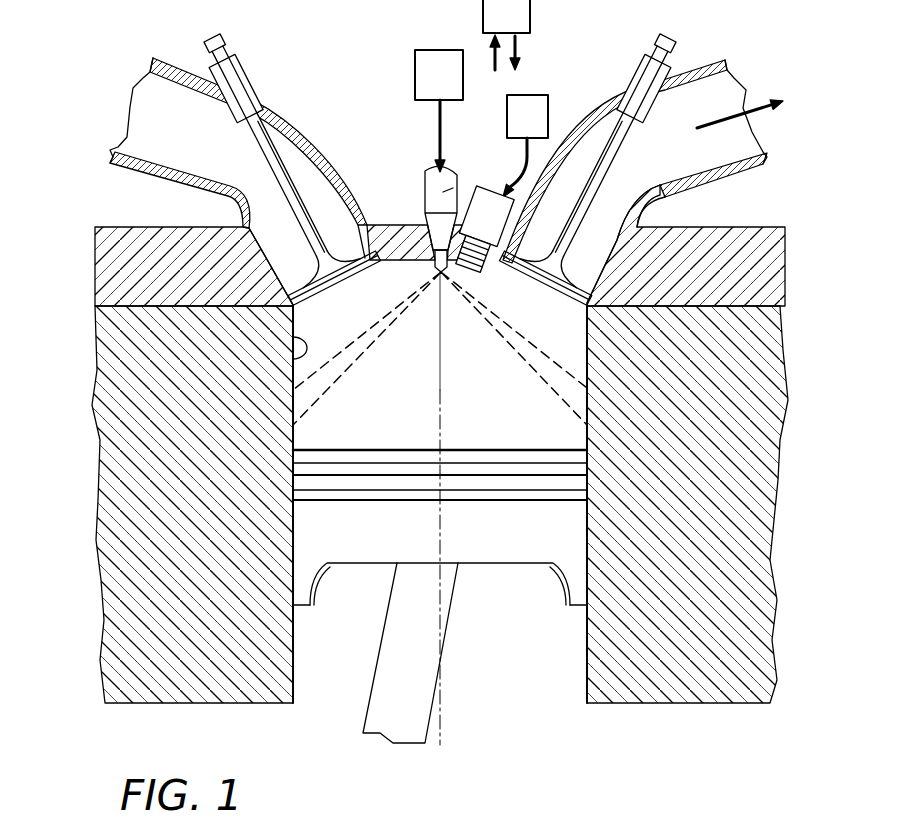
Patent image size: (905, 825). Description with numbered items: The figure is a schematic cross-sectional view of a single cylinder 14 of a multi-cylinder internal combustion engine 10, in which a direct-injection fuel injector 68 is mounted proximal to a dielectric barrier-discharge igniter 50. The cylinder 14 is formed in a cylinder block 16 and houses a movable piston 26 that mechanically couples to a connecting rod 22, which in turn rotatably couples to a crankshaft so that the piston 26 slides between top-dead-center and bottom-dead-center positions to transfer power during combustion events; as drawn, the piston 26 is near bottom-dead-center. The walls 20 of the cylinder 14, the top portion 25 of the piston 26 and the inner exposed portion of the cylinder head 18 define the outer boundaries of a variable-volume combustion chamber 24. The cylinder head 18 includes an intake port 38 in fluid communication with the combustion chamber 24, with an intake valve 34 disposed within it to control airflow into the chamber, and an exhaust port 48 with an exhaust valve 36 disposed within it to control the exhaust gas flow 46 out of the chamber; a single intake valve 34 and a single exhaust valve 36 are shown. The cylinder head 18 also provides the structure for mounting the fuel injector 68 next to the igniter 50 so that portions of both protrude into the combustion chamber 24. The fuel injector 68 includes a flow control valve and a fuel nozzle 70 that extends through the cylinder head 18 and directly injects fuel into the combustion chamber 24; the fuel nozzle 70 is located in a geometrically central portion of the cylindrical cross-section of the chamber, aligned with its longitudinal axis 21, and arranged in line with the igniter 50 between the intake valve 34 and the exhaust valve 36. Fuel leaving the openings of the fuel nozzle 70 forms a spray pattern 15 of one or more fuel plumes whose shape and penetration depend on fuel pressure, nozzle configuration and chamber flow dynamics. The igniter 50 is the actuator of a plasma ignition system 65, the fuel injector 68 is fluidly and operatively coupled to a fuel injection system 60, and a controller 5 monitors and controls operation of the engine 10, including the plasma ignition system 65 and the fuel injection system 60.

The controller 5 is at (498, 29).
The internal combustion engine 10 is at (126, 78).
The cylinder 14 is at (292, 440).
The spray pattern 15 is at (537, 367).
The cylinder block 16 is at (753, 520).
The cylinder head 18 is at (396, 183).
The walls of the cylinder 20 is at (292, 357).
The longitudinal axis 21 is at (442, 702).
The connecting rod 22 is at (400, 621).
The combustion chamber 24 is at (434, 356).
The top portion of the piston 25 is at (525, 450).
The piston 26 is at (325, 500).
The intake valve 34 is at (277, 147).
The exhaust valve 36 is at (627, 142).
The intake port 38 is at (181, 66).
The exhaust gas flow 46 is at (722, 128).
The exhaust port 48 is at (707, 62).
The dielectric barrier-discharge igniter 50 is at (494, 197).
The fuel injection system 60 is at (427, 89).
The plasma ignition system 65 is at (515, 131).
The direct-injection fuel injector 68 is at (447, 193).
The fuel nozzle 70 is at (433, 266).